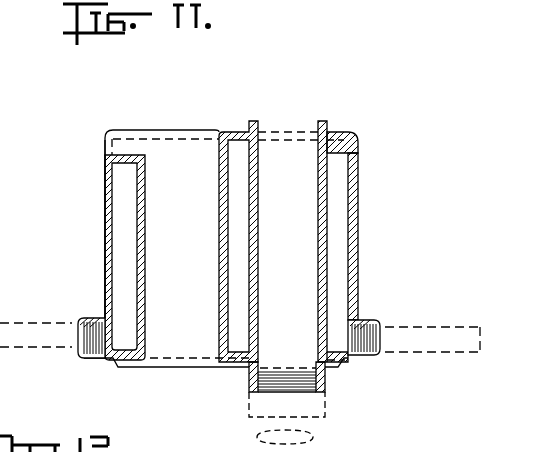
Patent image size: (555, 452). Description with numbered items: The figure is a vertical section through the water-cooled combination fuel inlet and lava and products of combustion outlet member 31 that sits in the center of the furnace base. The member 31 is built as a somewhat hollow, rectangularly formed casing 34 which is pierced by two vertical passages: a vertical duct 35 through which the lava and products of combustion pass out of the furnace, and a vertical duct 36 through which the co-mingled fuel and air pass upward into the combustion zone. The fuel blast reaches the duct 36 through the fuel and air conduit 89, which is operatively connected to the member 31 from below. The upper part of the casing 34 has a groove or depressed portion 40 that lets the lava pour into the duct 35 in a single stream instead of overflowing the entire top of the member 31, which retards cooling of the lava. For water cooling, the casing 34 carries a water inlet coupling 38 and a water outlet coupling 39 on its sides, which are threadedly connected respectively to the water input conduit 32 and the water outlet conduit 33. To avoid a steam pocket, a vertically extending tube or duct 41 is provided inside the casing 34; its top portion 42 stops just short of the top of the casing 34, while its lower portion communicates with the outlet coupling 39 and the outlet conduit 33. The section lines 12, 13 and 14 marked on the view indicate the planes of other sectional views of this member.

The section line 12- 12 is at (70, 335).
The section line 13- 13 is at (170, 82).
The section line 14- 14 is at (364, 83).
The combination fuel inlet and lava and products of combustion outlet member 31 is at (358, 205).
The water input conduit 32 is at (5, 321).
The water outlet conduit 33 is at (437, 325).
The casing 34 is at (103, 201).
The vertical duct 35 is at (145, 207).
The vertical duct 36 is at (259, 200).
The water inlet coupling 38 is at (88, 318).
The water outlet coupling 39 is at (360, 322).
The groove or depressed portion 40 is at (125, 155).
The vertically extending tube or duct 41 is at (341, 257).
The top portion 42 is at (357, 139).
The fuel and air conduit 89 is at (258, 431).